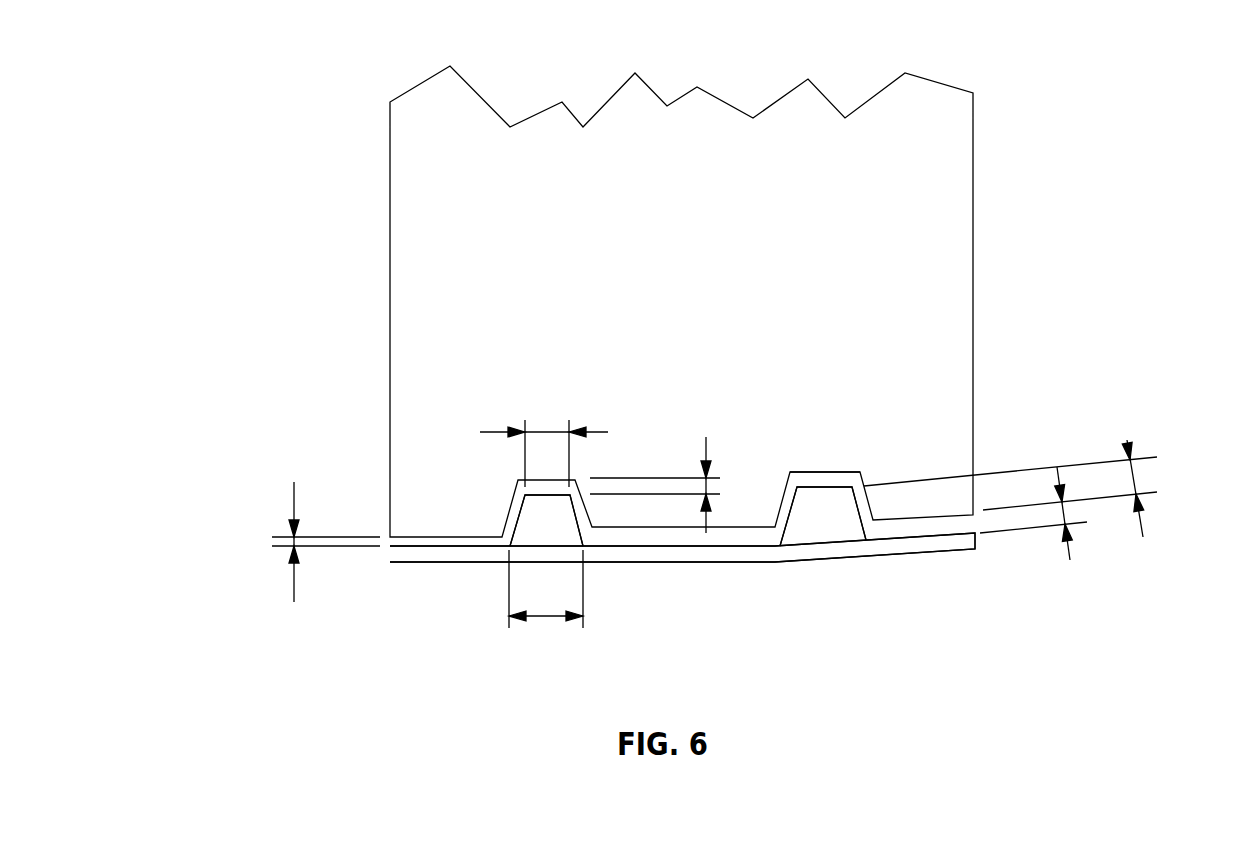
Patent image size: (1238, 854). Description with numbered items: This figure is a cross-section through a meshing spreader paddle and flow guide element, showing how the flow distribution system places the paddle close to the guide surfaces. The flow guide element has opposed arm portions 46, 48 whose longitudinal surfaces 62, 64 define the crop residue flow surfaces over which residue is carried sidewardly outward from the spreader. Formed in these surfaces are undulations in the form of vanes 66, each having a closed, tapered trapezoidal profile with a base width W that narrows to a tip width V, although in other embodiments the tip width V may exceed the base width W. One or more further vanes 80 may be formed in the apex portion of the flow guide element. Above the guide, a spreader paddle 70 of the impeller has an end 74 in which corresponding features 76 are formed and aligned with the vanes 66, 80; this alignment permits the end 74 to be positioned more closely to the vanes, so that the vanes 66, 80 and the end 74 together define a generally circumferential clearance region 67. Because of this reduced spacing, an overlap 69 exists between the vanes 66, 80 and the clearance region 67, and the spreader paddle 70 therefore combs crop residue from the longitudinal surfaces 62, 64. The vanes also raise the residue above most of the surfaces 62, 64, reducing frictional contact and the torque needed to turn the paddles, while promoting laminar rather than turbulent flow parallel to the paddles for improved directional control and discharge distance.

The spreader paddle 70 is at (973, 232).
The arm portion 46 is at (935, 552).
The arm portion 48 is at (935, 552).
The longitudinal surface 62 is at (625, 547).
The longitudinal surface 64 is at (625, 547).
The vane 66 is at (790, 498).
The vane 80 is at (790, 498).
The feature 76 is at (836, 472).
The end 74 is at (950, 516).
The overlap 69 is at (1133, 476).
The clearance region 67 is at (295, 584).
The tip width V is at (547, 430).
The base width W is at (545, 617).